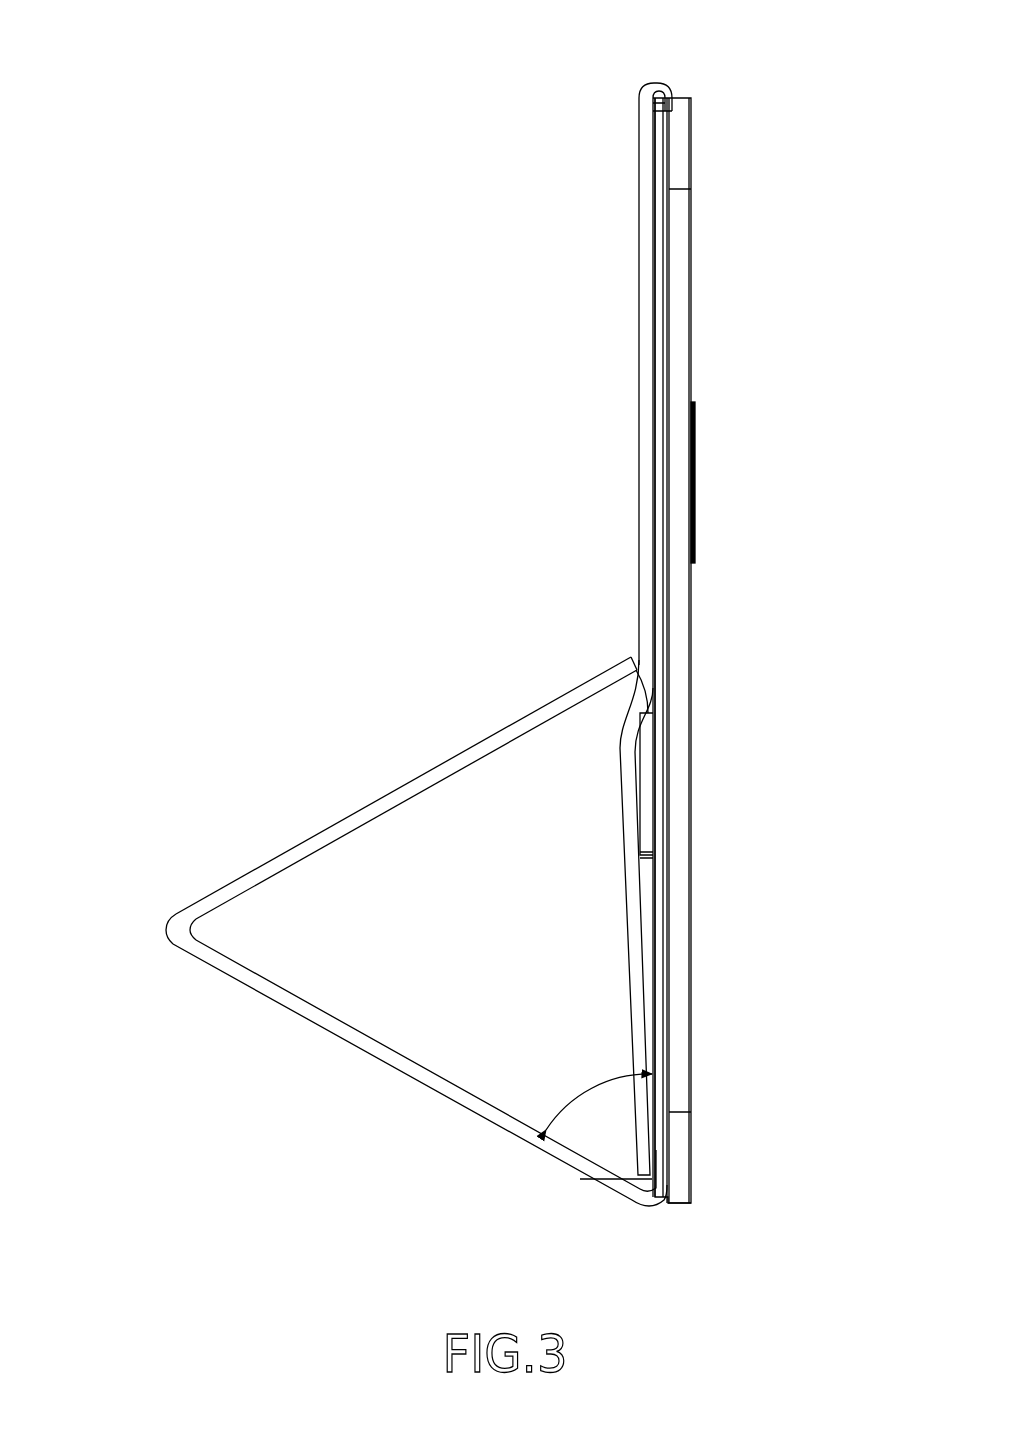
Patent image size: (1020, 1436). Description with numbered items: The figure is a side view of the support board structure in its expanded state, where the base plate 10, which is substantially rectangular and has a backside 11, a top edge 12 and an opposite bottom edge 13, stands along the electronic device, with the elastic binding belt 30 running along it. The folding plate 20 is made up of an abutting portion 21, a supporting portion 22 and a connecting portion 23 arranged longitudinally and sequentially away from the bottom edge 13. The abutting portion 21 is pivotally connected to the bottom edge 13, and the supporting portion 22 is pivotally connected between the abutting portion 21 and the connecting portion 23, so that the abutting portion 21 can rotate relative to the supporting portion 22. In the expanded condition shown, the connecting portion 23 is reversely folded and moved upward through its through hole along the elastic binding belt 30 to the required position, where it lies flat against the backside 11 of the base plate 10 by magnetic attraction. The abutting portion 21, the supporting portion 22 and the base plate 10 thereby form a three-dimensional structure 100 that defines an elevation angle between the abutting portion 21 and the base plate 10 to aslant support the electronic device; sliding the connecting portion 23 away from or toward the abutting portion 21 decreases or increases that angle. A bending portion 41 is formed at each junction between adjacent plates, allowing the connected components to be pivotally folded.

The three-dimensional structure 100 is at (460, 726).
The base plate 10 is at (684, 330).
The backside 11 is at (580, 1179).
The top edge 12 is at (666, 101).
The bottom edge 13 is at (668, 1208).
The folding plate 20 is at (200, 746).
The abutting portion 21 is at (255, 983).
The supporting portion 22 is at (307, 847).
The connecting portion 23 is at (645, 798).
The elastic binding belt 30 is at (634, 271).
The bending portion 41 is at (173, 930).